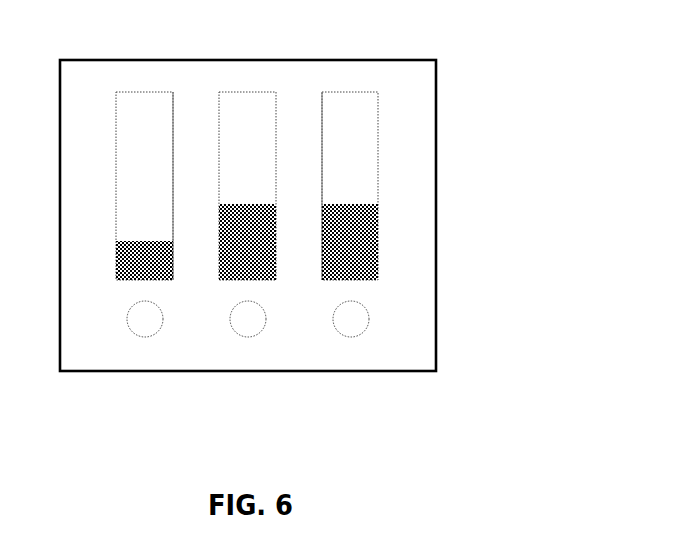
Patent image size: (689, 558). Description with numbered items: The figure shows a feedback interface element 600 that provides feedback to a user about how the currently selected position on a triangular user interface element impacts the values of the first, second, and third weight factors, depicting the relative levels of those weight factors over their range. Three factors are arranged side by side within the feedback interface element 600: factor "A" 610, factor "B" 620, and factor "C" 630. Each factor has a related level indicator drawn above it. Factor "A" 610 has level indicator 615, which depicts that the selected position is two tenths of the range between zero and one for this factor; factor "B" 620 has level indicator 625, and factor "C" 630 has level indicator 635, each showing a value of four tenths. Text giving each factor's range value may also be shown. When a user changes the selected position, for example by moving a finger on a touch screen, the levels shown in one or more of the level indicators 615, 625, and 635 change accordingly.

The feedback interface element 600 is at (448, 98).
The factor "A" 610 is at (142, 347).
The factor "B" 620 is at (245, 347).
The factor "C" 630 is at (348, 347).
The level indicator 615 is at (145, 84).
The level indicator 625 is at (256, 84).
The level indicator 635 is at (358, 84).